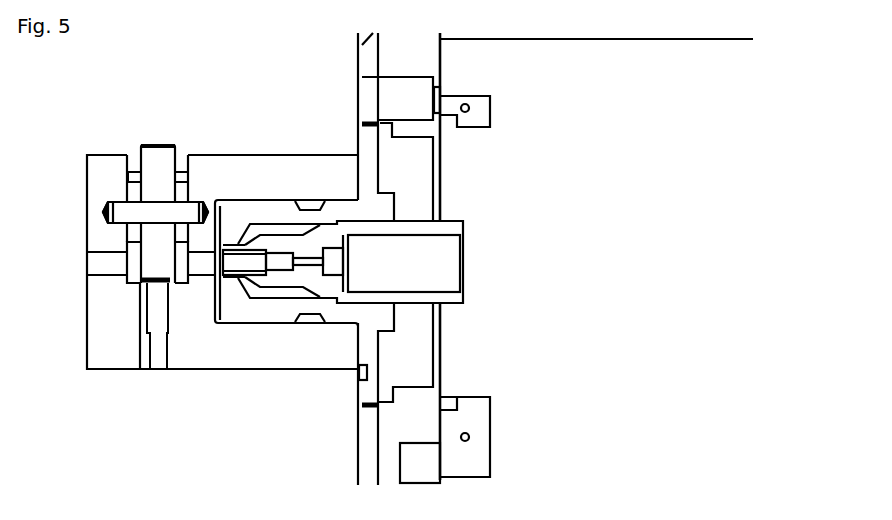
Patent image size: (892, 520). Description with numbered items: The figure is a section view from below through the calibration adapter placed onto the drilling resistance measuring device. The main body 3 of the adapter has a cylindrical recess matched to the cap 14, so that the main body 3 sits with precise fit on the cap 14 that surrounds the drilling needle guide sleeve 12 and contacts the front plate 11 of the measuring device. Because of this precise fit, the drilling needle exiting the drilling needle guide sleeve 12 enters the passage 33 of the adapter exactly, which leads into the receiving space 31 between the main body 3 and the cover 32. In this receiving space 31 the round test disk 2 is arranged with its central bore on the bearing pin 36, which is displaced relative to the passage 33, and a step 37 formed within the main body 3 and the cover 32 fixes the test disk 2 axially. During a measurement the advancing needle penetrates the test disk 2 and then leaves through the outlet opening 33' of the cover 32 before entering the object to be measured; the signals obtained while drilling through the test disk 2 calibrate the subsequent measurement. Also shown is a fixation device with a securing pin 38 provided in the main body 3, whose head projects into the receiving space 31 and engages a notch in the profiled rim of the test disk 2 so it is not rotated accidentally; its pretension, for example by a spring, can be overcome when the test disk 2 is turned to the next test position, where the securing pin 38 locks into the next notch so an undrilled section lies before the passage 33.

The test disk 2 is at (158, 158).
The main body 3 is at (240, 165).
The front plate 11 is at (362, 455).
The drilling needle guide sleeve 12 is at (328, 237).
The cap 14 is at (370, 155).
The receiving space 31 is at (137, 268).
The cover 32 is at (102, 183).
The passage 33 is at (201, 289).
The outlet opening 33' is at (77, 263).
The bearing pin 36 is at (122, 217).
The step 37 is at (133, 192).
The securing pin 38 is at (158, 325).